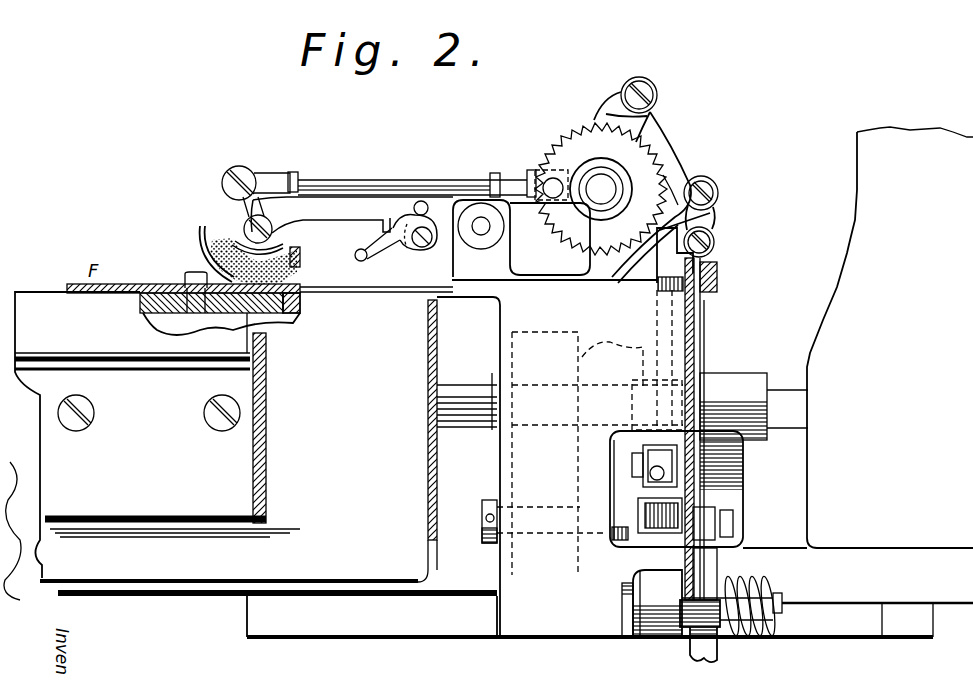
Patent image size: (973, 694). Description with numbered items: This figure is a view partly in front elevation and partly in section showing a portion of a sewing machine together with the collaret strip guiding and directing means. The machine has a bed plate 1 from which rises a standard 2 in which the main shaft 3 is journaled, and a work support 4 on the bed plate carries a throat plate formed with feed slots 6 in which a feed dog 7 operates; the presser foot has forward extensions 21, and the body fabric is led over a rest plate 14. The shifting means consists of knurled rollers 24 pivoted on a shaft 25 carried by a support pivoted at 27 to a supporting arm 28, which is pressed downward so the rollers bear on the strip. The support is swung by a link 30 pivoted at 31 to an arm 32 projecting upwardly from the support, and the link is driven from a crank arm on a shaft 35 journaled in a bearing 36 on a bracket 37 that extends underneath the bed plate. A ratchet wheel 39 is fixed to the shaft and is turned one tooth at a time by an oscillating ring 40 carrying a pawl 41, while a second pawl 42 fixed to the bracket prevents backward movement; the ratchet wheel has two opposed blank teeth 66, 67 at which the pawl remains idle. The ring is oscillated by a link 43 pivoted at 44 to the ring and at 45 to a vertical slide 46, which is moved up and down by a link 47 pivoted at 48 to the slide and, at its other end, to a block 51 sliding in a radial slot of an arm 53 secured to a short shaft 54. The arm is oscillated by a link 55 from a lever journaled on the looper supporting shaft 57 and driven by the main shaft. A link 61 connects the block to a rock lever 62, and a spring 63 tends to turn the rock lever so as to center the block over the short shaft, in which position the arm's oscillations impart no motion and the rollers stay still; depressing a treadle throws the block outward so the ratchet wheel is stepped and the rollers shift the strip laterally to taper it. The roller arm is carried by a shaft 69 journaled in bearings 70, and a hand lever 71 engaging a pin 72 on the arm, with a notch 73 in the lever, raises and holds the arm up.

The bed plate 1 is at (610, 592).
The standard 2 is at (890, 337).
The main shaft 3 is at (793, 408).
The work support 4 is at (291, 316).
The feed slots 6 is at (147, 315).
The feed dog 7 is at (193, 316).
The rest plate 14 is at (197, 357).
The extensions 21 is at (185, 283).
The rollers 24 is at (300, 258).
The shaft 25 is at (220, 240).
The pivotal point 27 is at (246, 227).
The supporting arm 28 is at (322, 200).
The link 30 is at (440, 186).
The pivot 31 is at (244, 180).
The arm 32 is at (248, 208).
The shaft 35 is at (612, 186).
The bearing 36 is at (578, 263).
The bracket 37 is at (597, 437).
The ratchet wheel 39 is at (630, 150).
The oscillating ring 40 is at (674, 188).
The pawl 41 is at (622, 100).
The pawl 42 is at (631, 282).
The link 43 is at (704, 221).
The pivot 44 is at (718, 192).
The pivot 45 is at (714, 246).
The vertical slide 46 is at (668, 242).
The link 47 is at (704, 348).
The pivot 48 is at (717, 292).
The block 51 is at (648, 547).
The arm 53 is at (653, 550).
The short shaft 54 is at (552, 493).
The link 55 is at (673, 447).
The looper supporting shaft 57 is at (477, 420).
The link 61 is at (710, 516).
The rock lever 62 is at (718, 560).
The spring 63 is at (757, 633).
The blank tooth 66 is at (601, 171).
The blank tooth 67 is at (604, 213).
The shaft 69 is at (482, 234).
The bearings 70 is at (459, 258).
The hand lever 71 is at (389, 249).
The pin 72 is at (495, 172).
The notch 73 is at (387, 218).